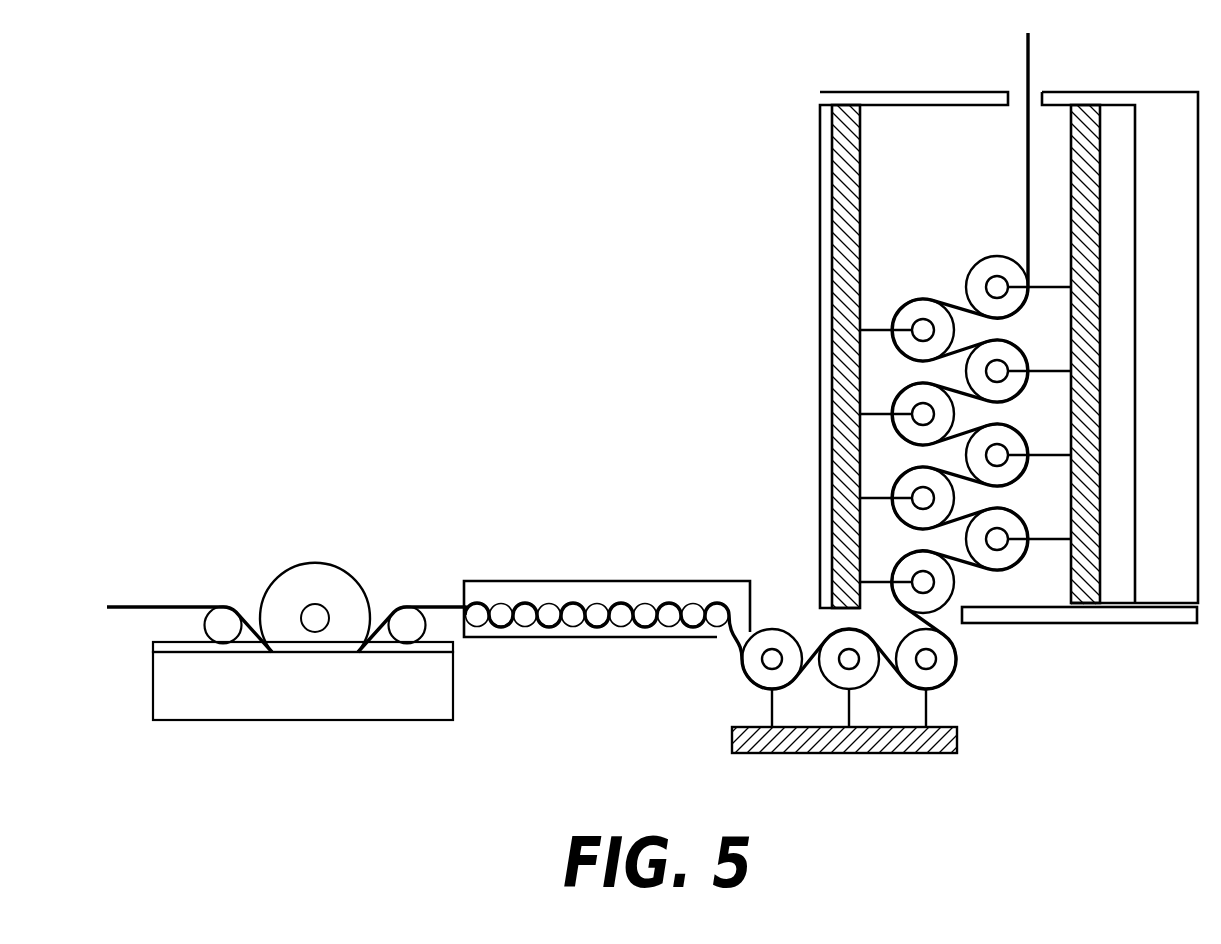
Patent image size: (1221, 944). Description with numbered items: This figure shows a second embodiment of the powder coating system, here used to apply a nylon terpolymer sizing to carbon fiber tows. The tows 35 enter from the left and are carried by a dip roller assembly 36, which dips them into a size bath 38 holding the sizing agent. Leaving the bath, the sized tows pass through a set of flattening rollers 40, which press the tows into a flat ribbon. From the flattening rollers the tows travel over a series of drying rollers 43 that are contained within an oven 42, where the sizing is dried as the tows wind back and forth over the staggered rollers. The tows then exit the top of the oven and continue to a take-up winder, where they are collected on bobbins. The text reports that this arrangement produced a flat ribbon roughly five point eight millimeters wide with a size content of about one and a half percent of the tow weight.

The tows 35 is at (149, 606).
The dip roller assembly 36 is at (318, 565).
The size bath 38 is at (455, 688).
The flattening rollers 40 is at (598, 627).
The oven 42 is at (895, 182).
The drying rollers 43 is at (902, 308).